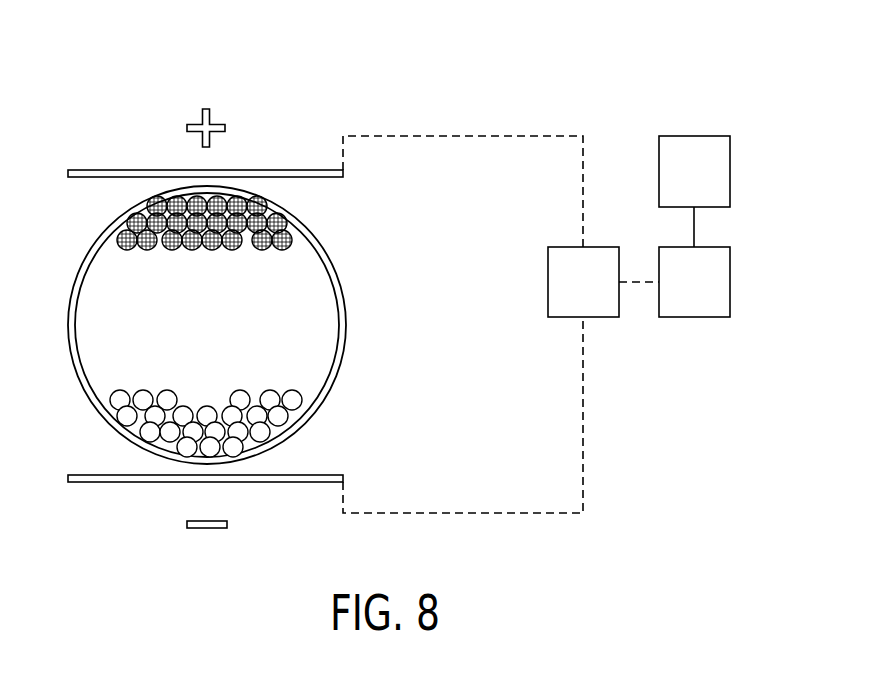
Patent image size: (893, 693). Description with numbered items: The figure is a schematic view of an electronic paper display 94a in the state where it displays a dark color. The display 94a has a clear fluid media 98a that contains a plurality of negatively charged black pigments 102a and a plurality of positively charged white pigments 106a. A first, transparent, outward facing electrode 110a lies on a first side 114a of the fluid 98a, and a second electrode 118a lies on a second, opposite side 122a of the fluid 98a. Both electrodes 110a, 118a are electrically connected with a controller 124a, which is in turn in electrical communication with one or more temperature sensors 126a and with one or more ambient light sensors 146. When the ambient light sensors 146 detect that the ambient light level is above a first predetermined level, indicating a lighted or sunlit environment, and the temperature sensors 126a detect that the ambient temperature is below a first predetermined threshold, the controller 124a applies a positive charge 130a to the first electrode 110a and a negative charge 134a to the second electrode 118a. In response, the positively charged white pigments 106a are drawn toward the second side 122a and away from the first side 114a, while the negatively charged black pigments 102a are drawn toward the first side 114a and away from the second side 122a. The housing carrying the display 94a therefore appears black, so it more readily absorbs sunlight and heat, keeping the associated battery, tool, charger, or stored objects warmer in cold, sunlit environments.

The electronic paper display 94a is at (462, 218).
The clear fluid media 98a is at (100, 322).
The negatively charged black pigments 102a is at (127, 227).
The positively charged white pigments 106a is at (133, 423).
The first electrode 110a is at (282, 168).
The first side 114a is at (247, 193).
The second electrode 118a is at (290, 482).
The second side 122a is at (233, 458).
The controller 124a is at (596, 317).
The temperature sensor 126a is at (707, 317).
The positive charge 130a is at (225, 122).
The negative charge 134a is at (187, 523).
The ambient light sensor 146 is at (730, 171).